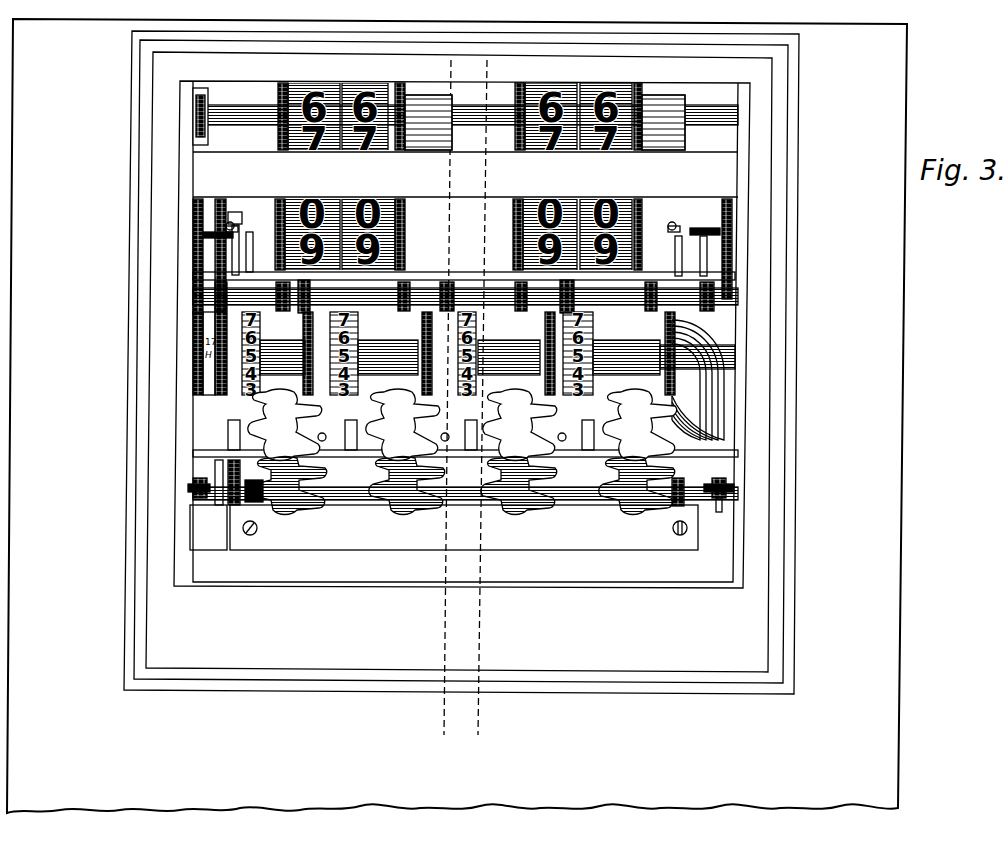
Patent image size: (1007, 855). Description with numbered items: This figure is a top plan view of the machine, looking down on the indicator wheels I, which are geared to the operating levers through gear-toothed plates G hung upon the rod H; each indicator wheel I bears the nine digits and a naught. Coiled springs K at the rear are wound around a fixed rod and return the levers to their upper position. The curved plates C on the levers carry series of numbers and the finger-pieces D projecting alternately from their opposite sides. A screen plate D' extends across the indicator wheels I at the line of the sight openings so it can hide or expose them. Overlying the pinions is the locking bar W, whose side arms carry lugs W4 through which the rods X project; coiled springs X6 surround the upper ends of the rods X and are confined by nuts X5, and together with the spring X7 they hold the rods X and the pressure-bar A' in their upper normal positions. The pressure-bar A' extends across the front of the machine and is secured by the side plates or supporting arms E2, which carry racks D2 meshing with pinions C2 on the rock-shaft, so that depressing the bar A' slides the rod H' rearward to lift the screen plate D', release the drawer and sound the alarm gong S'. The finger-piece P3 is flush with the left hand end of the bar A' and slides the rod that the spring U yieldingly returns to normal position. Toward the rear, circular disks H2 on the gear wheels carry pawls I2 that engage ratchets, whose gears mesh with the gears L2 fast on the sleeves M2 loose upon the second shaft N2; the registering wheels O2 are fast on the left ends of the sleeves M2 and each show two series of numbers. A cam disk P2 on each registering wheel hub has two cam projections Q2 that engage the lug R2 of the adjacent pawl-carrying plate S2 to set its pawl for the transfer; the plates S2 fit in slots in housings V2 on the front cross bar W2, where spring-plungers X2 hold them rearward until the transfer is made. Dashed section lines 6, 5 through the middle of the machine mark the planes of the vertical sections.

The indicator wheels I is at (247, 112).
The coiled springs K is at (685, 140).
The rod H is at (436, 122).
The section line 6 is at (440, 74).
The section line 5 is at (470, 74).
The spring U is at (193, 262).
The rods X is at (450, 211).
The nuts X5 is at (451, 221).
The coiled springs X6 is at (453, 234).
The spring X7 is at (460, 228).
The lugs W4 is at (248, 214).
The gear-toothed plates G is at (277, 250).
The locking bar W is at (254, 280).
The pawl I2 is at (670, 270).
The screen plate D' is at (607, 269).
The circular disks H2 is at (446, 297).
The sleeves M2 is at (460, 357).
The second shaft N2 is at (736, 357).
The alarm gong S' is at (698, 380).
The gears L2 is at (487, 352).
The registering wheels O2 is at (440, 385).
The cam disk P2 is at (375, 367).
The lug R2 is at (494, 320).
The side plates or supporting arms E2 is at (493, 320).
The curved plates C is at (462, 425).
The cam projections Q2 is at (314, 420).
The pawl-carrying plate S2 is at (461, 410).
The housings V2 is at (450, 438).
The finger-pieces D is at (463, 486).
The spring-plungers X2 is at (445, 463).
The front cross bar W2 is at (471, 470).
The racks D2 is at (672, 484).
The pressure-bar A' is at (464, 527).
The finger-piece P3 is at (208, 527).
The pinions C2 is at (462, 522).
The rod H' is at (719, 508).